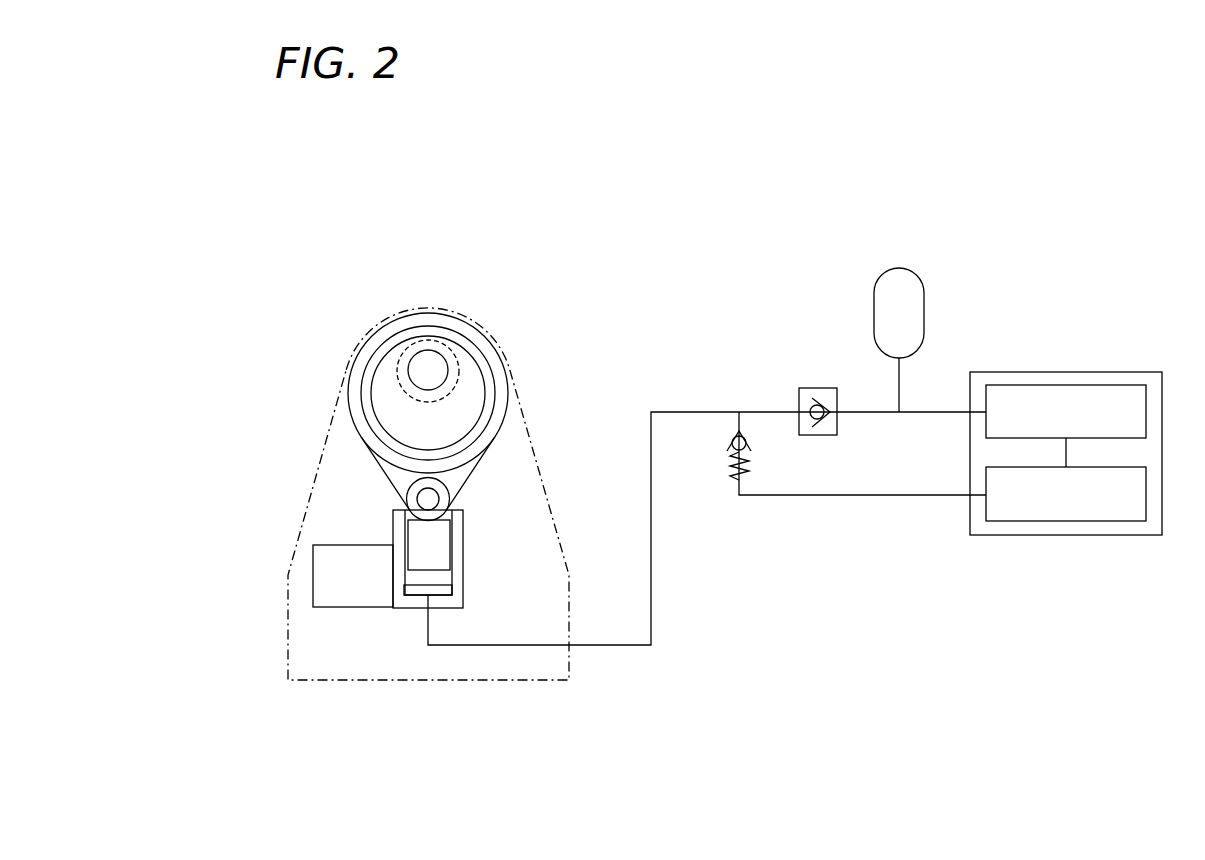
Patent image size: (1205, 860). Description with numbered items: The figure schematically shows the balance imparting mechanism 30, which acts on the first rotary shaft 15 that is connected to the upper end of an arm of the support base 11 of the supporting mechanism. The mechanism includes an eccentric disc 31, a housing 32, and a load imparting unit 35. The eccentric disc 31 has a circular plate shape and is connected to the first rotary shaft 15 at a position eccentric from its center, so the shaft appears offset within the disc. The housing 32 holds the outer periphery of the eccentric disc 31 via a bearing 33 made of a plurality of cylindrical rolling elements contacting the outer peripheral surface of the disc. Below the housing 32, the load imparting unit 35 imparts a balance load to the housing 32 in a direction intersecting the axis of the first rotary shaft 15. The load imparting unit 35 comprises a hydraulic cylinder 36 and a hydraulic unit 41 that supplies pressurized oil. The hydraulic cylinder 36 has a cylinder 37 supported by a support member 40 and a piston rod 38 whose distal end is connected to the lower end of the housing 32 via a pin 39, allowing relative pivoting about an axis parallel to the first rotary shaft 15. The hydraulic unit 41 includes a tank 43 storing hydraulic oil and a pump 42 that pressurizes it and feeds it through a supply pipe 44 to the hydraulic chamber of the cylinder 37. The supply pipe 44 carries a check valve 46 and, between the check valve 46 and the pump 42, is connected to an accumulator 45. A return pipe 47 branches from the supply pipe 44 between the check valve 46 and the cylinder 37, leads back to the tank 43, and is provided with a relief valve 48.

The support base 11 is at (480, 680).
The first rotary shaft 15 is at (433, 347).
The balance imparting mechanism 30 is at (388, 391).
The eccentric disc 31 is at (417, 363).
The housing 32 is at (497, 367).
The bearing 33 is at (467, 345).
The load imparting unit 35 is at (429, 603).
The hydraulic cylinder 36 is at (429, 553).
The cylinder 37 is at (398, 523).
The piston rod 38 is at (445, 539).
The pin 39 is at (433, 500).
The support member 40 is at (315, 582).
The hydraulic unit 41 is at (1073, 446).
The pump 42 is at (1057, 385).
The tank 43 is at (1083, 522).
The supply pipe 44 is at (693, 410).
The accumulator 45 is at (899, 268).
The check valve 46 is at (817, 388).
The return pipe 47 is at (851, 495).
The relief valve 48 is at (743, 453).